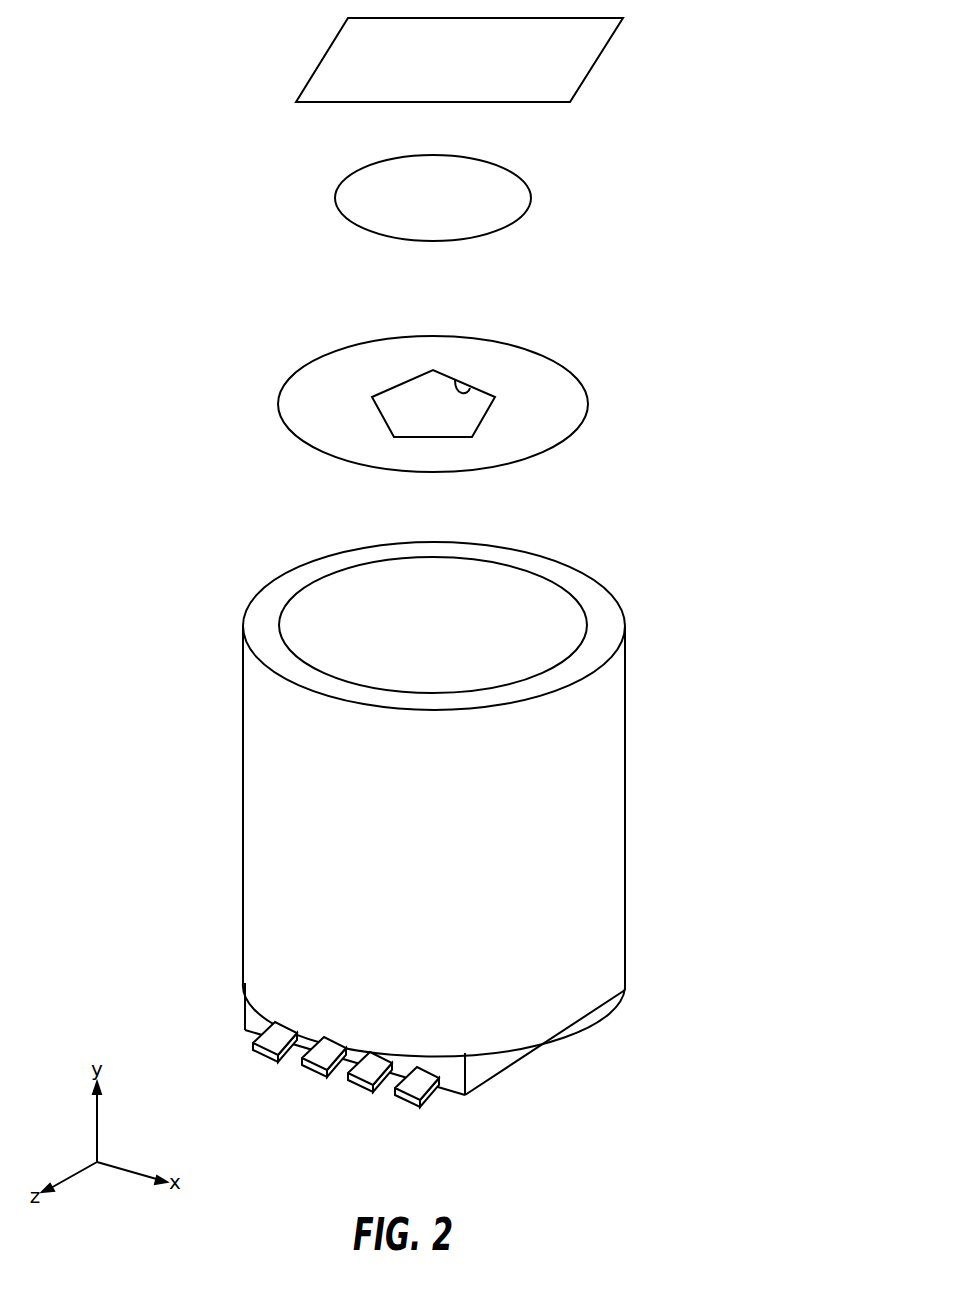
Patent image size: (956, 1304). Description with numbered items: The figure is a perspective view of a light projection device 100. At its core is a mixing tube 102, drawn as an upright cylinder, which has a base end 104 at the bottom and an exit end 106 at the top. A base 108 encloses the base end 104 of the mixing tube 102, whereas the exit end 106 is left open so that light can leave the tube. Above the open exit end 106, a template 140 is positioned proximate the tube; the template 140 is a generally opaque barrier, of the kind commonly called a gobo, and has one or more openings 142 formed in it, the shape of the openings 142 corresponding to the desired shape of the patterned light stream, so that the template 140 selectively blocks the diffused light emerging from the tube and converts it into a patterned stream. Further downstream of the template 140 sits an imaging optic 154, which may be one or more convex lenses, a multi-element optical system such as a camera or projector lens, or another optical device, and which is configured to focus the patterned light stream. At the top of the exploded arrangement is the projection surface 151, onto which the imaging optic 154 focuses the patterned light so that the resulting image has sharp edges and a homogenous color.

The light projection device 100 is at (185, 473).
The mixing tube 102 is at (625, 747).
The base end 104 is at (617, 998).
The exit end 106 is at (603, 623).
The base 108 is at (313, 1068).
The template 140 is at (570, 403).
The opening 142 is at (462, 393).
The projection surface 151 is at (600, 60).
The imaging optic 154 is at (533, 198).